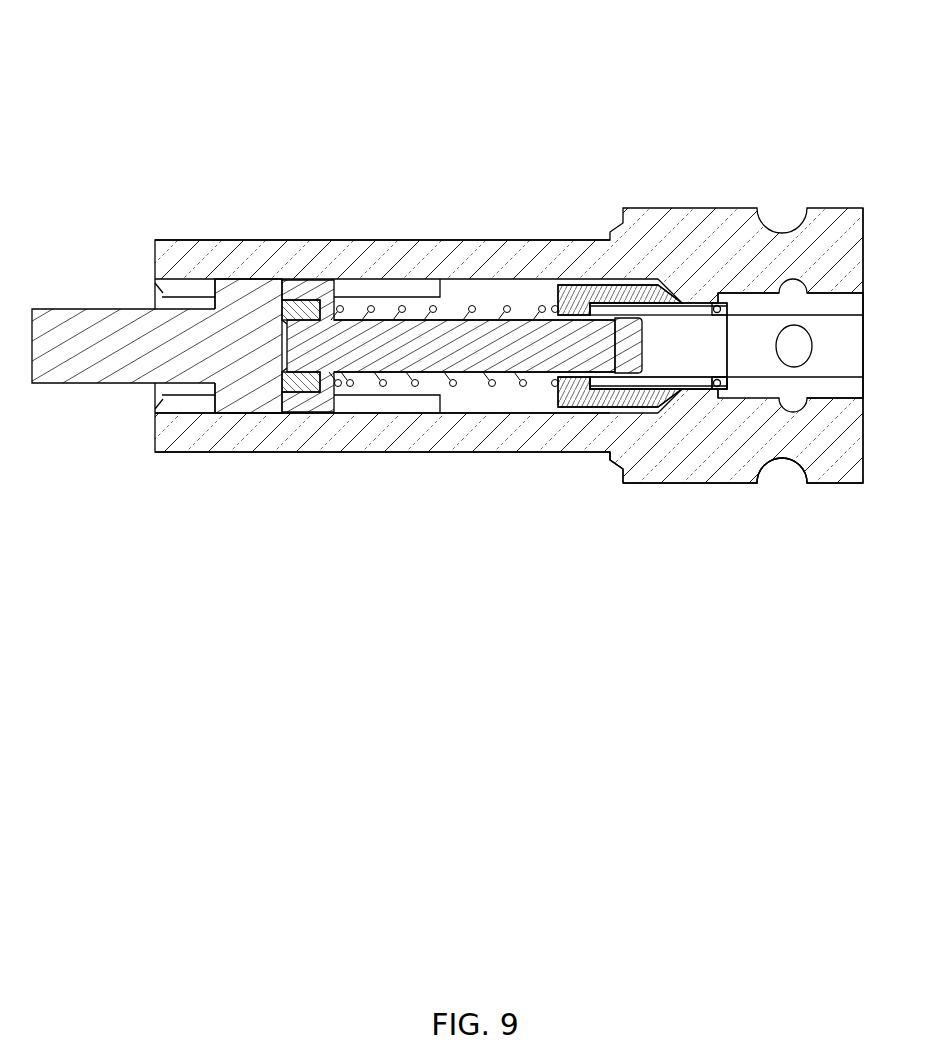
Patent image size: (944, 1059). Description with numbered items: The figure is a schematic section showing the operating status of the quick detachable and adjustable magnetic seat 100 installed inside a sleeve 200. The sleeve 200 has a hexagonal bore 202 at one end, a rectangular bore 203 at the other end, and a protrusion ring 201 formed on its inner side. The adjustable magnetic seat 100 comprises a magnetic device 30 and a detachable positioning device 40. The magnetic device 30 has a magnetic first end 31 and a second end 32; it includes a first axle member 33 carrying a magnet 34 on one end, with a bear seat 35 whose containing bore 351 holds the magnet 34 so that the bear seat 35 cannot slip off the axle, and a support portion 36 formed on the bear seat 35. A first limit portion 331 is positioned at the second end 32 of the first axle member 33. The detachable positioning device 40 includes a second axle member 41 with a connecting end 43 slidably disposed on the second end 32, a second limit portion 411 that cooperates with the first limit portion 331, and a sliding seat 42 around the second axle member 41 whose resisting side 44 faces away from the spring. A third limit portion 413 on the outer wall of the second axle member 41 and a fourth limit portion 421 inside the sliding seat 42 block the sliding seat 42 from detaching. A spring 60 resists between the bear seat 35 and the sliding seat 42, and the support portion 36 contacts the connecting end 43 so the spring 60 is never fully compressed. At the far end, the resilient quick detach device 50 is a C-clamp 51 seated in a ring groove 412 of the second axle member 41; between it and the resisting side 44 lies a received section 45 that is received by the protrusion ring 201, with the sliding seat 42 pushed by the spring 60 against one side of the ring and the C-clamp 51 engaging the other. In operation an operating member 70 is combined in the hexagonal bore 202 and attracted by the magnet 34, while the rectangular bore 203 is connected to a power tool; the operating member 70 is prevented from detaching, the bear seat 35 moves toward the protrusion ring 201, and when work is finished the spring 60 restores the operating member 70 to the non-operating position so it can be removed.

The magnetic device 30 is at (340, 92).
The sleeve 200 is at (713, 227).
The hexagonal bore 202 is at (172, 288).
The rectangular bore 203 is at (847, 323).
The protrusion ring 201 is at (675, 322).
The operating member 70 is at (72, 370).
The first end 31 is at (277, 400).
The first axle member 33 is at (432, 360).
The first limit portion 331 is at (615, 373).
The magnet 34 is at (285, 316).
The bear seat 35 is at (313, 290).
The containing bore 351 is at (298, 307).
The support portion 36 is at (385, 317).
The spring 60 is at (370, 310).
The connecting end 43 is at (483, 313).
The second axle member 41 is at (583, 295).
The second limit portion 411 is at (590, 300).
The fourth limit portion 421 is at (578, 305).
The third limit portion 413 is at (570, 388).
The second end 32 is at (668, 312).
The detachable positioning device 40 is at (655, 420).
The sliding seat 42 is at (630, 402).
The resisting side 44 is at (700, 383).
The received section 45 is at (715, 392).
The ring groove 412 is at (730, 307).
The resilient quick detach device 50 is at (795, 560).
The C-clamp 51 is at (743, 461).
The adjustable magnetic seat 100 is at (362, 418).